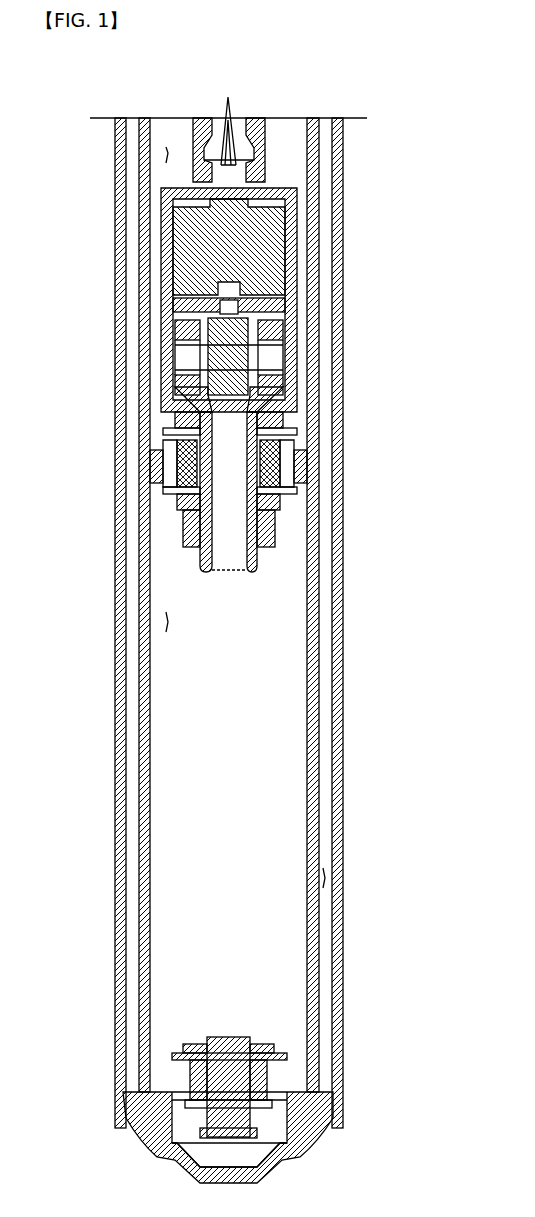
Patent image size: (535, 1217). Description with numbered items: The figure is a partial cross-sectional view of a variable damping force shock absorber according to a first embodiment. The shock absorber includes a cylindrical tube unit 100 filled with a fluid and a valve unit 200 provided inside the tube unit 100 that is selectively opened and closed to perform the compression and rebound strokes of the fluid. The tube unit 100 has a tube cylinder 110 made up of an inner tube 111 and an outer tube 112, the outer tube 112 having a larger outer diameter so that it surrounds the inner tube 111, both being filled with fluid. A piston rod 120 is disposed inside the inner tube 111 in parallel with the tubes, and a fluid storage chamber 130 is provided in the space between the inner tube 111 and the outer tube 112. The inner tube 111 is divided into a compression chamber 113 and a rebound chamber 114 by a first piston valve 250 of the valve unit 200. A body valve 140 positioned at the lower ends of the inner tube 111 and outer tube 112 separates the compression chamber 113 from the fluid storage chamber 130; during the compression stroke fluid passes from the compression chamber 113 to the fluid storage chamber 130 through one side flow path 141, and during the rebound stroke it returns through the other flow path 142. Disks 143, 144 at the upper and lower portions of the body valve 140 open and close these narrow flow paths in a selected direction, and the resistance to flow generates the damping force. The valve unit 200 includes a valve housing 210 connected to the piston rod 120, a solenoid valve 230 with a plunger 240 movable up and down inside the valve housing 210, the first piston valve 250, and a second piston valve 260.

The tube unit 100 is at (412, 222).
The tube cylinder 110 is at (283, 623).
The inner tube 111 is at (318, 148).
The outer tube 112 is at (338, 190).
The compression chamber 113 is at (168, 622).
The rebound chamber 114 is at (168, 153).
The piston rod 120 is at (263, 126).
The fluid storage chamber 130 is at (325, 878).
The body valve 140 is at (263, 1137).
The one side flow path 141 is at (196, 1082).
The other flow path 142 is at (262, 1080).
The disk 143 is at (287, 1056).
The disk 144 is at (292, 1142).
The valve unit 200 is at (258, 582).
The valve housing 210 is at (160, 222).
The solenoid valve 230 is at (277, 250).
The plunger 240 is at (290, 310).
The first piston valve 250 is at (307, 458).
The second piston valve 260 is at (287, 350).